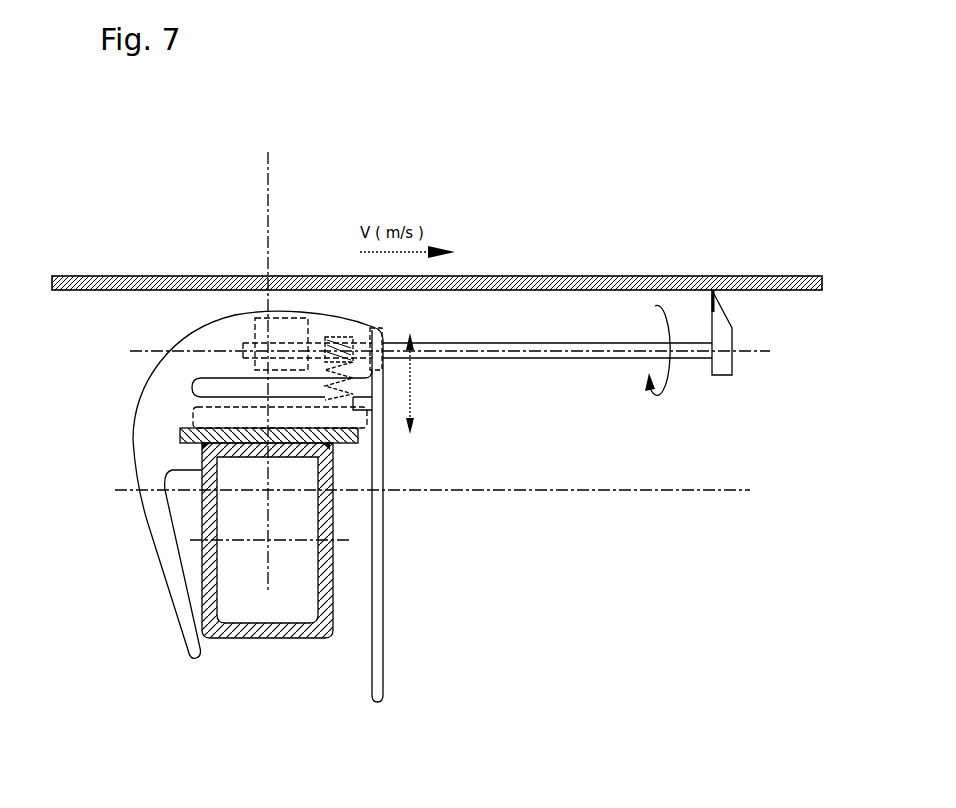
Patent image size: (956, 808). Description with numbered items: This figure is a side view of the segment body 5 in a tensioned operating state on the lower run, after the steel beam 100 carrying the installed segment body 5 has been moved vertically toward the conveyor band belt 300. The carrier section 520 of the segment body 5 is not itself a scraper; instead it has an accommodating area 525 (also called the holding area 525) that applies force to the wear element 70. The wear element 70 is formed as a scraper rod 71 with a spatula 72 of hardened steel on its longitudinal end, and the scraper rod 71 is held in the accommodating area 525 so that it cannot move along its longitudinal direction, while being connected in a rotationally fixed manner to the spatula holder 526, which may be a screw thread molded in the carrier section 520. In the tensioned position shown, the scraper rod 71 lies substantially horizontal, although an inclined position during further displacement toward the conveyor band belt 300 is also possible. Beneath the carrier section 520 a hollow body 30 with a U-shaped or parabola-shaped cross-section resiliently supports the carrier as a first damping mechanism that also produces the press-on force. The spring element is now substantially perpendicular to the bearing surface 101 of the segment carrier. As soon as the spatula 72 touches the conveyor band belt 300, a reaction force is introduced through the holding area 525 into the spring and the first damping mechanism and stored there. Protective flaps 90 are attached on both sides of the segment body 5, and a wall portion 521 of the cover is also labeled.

The conveyor band belt 300 is at (577, 277).
The carrier section 520 is at (183, 344).
The housing wall portion 521 is at (140, 417).
The protective flap 90 is at (167, 577).
The segment body 5 is at (83, 478).
The spatula holder 526 is at (285, 325).
The accommodating area 525 is at (386, 338).
The hollow body 30 is at (322, 381).
The bearing surface 101 is at (350, 448).
The steel beam 100 is at (330, 555).
The wear element 70 is at (534, 359).
The scraper rod 71 is at (583, 353).
The spatula 72 is at (731, 326).